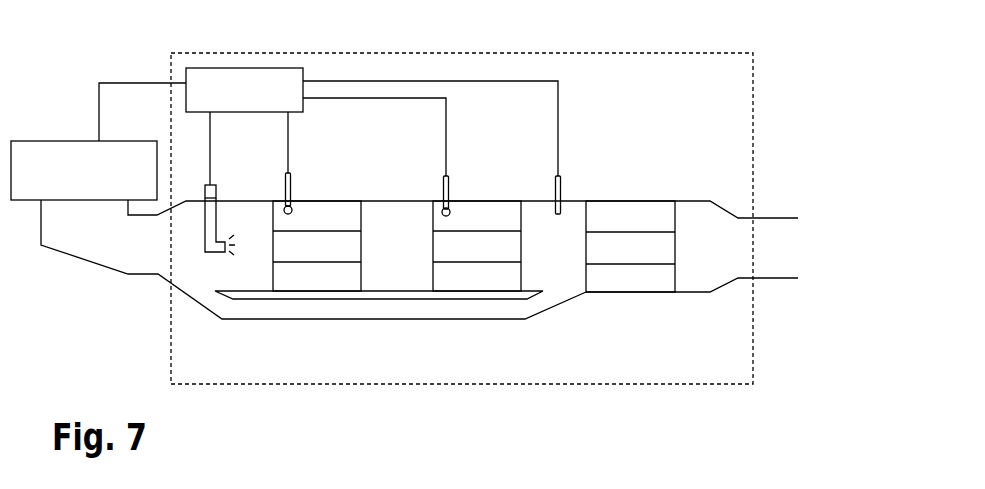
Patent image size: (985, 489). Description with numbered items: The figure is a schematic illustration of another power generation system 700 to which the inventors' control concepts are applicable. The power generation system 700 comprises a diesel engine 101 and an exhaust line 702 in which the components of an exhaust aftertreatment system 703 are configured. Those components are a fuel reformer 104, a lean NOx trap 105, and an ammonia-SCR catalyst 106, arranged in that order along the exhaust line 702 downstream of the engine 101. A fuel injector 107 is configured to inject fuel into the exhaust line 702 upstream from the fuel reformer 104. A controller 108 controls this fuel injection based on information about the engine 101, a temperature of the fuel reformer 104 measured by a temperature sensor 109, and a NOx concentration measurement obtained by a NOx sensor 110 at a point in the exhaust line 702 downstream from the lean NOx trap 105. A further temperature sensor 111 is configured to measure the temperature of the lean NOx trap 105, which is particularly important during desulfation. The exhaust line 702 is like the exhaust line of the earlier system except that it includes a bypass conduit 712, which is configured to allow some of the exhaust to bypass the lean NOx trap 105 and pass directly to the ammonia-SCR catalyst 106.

The power generation system 700 is at (139, 49).
The exhaust aftertreatment system 703 is at (694, 53).
The diesel engine 101 is at (77, 141).
The controller 108 is at (268, 68).
The fuel injector 107 is at (208, 185).
The temperature sensor 109 is at (290, 173).
The fuel reformer 104 is at (316, 201).
The temperature sensor 111 is at (448, 176).
The lean NOx trap 105 is at (482, 201).
The NOx sensor 110 is at (560, 176).
The ammonia-SCR catalyst 106 is at (632, 201).
The exhaust line 702 is at (186, 298).
The bypass conduit 712 is at (381, 320).